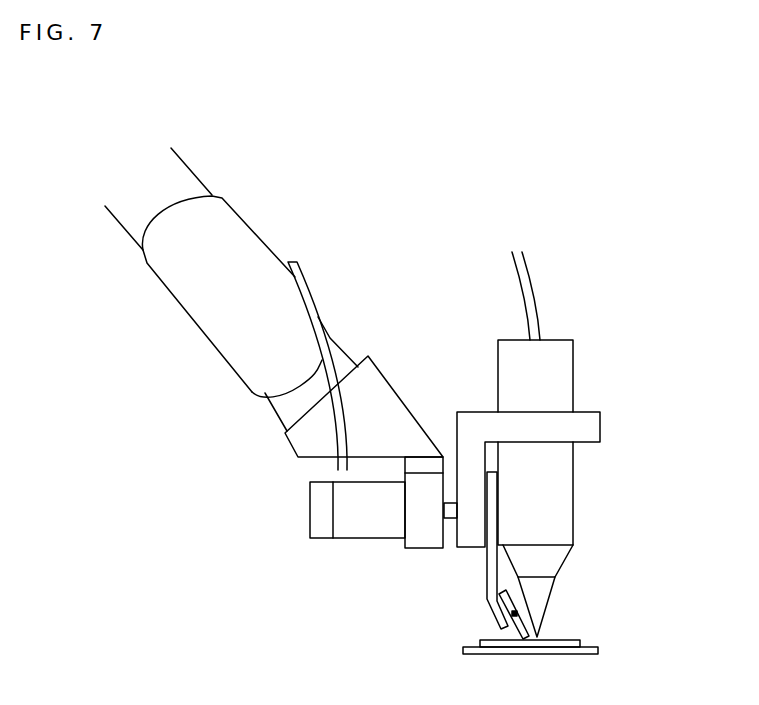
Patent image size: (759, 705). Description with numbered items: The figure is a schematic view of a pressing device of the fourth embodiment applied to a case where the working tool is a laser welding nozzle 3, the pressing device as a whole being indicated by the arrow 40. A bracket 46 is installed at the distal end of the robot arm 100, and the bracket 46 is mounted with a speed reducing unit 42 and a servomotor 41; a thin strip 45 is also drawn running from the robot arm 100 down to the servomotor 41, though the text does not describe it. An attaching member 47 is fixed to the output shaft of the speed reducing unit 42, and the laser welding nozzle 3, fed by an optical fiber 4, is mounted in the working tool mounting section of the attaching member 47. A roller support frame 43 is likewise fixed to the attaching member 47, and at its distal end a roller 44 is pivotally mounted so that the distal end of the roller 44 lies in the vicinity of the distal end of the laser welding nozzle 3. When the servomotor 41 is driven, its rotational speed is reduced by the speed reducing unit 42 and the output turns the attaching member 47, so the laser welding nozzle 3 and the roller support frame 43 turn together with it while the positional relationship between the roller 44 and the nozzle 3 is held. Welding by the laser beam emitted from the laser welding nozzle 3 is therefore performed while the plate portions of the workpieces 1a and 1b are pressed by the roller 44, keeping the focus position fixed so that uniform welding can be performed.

The robot arm 100 is at (243, 224).
The leaf spring / blade 45 is at (305, 283).
The bracket 46 is at (284, 432).
The servomotor 41 is at (357, 538).
The speed reducing unit 42 is at (410, 548).
The attaching member 47 is at (593, 423).
The laser welding nozzle 3 is at (566, 503).
The optical fiber 4 is at (540, 328).
The roller support frame 43 is at (485, 565).
The roller 44 is at (496, 607).
The workpiece 1b is at (567, 637).
The workpiece 1a is at (577, 652).
The assembly 40 is at (389, 626).